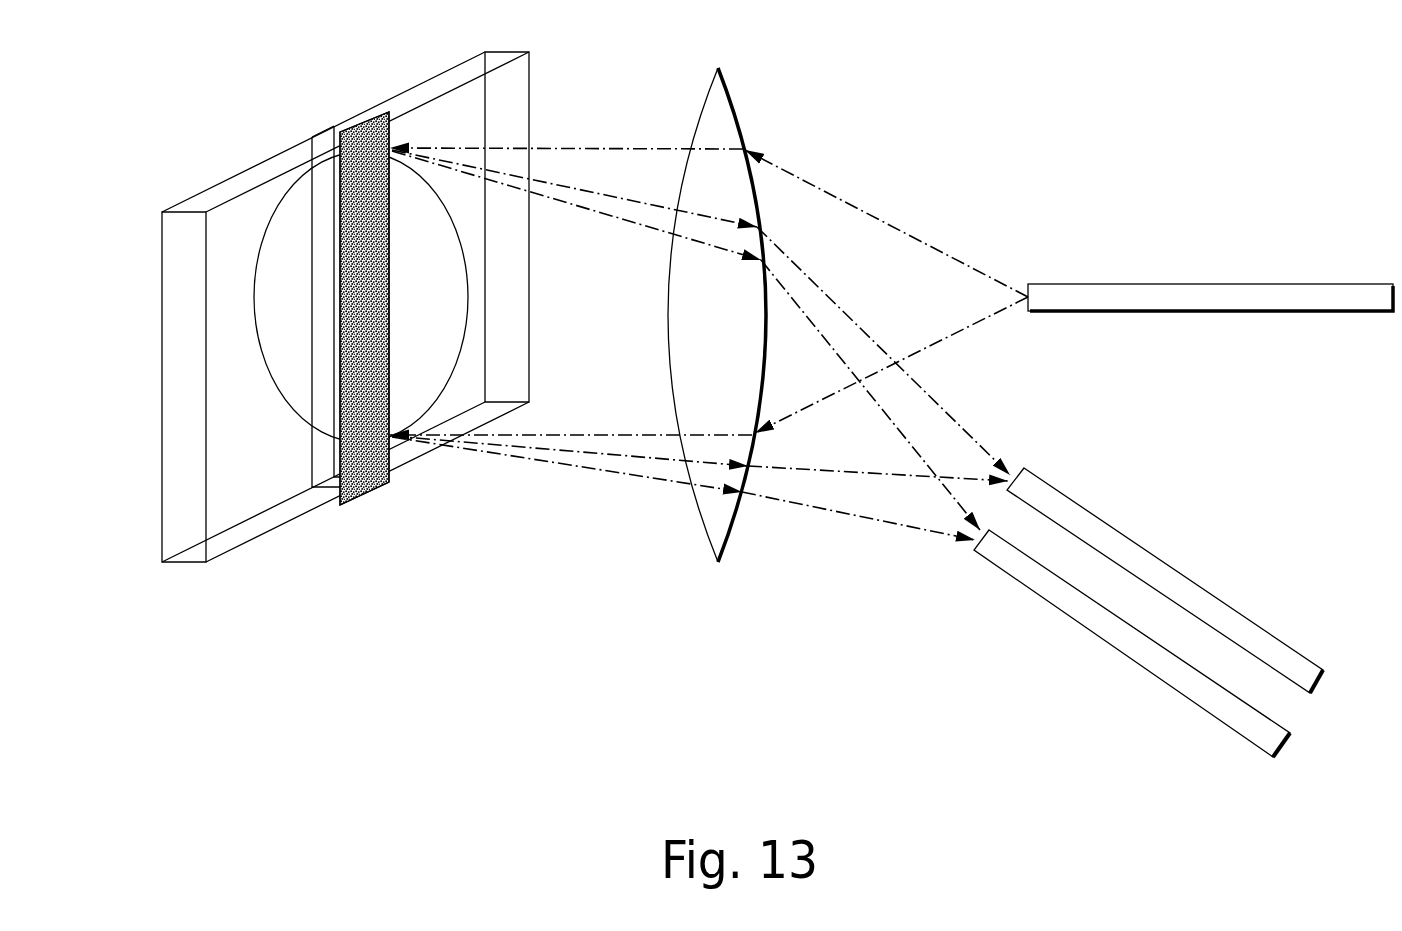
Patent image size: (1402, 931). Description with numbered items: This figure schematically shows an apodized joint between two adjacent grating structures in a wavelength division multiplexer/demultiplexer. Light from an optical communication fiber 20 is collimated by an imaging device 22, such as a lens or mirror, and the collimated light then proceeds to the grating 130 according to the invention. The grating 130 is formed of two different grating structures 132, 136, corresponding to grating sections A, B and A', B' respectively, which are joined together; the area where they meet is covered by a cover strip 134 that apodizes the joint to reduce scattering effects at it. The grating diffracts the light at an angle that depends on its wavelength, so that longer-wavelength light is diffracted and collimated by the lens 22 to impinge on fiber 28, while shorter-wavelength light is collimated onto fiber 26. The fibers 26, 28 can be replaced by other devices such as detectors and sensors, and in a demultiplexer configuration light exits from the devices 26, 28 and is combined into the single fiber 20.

The optical communication fiber 20 is at (1215, 284).
The imaging device 22 is at (735, 93).
The fiber 26 is at (1258, 625).
The fiber 28 is at (1183, 698).
The grating 130 is at (335, 332).
The grating structure 132 is at (230, 542).
The cover strip 134 is at (368, 490).
The grating structure 136 is at (433, 447).